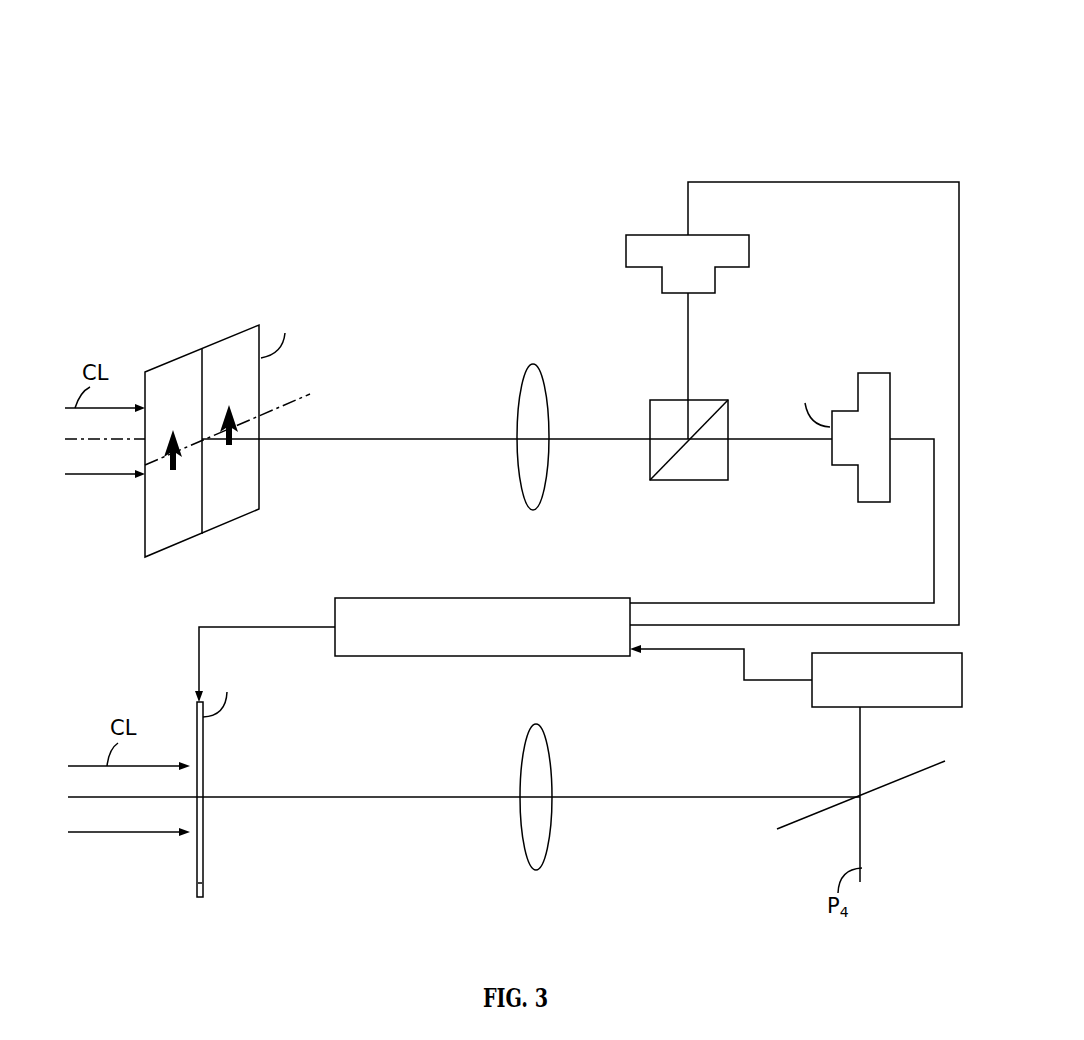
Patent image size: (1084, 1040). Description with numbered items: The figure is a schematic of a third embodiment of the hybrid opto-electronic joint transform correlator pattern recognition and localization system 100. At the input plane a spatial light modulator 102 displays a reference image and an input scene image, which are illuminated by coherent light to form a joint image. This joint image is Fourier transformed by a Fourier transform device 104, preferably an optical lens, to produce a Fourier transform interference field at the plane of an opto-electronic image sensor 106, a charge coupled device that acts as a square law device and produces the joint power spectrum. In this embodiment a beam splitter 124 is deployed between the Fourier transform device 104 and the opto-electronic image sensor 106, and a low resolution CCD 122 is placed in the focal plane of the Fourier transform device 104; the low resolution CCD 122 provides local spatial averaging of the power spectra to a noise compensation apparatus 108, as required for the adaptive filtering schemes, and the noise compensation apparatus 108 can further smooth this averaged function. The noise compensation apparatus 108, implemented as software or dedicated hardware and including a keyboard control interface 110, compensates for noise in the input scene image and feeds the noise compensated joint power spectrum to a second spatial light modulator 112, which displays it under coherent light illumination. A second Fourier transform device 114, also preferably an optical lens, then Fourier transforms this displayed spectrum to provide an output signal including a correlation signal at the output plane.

The hybrid opto-electronic joint transform correlator pattern recognition and locali 100 is at (742, 61).
The spatial light modulator 102 is at (178, 371).
The Fourier transform device 104 is at (530, 377).
The opto-electronic image sensor 106 is at (868, 380).
The noise compensation apparatus 108 is at (592, 647).
The keyboard control interface 110 is at (940, 692).
The second spatial light modulator 112 is at (203, 893).
The Fourier transform device 114 is at (538, 855).
The low resolution CCD 122 is at (666, 240).
The beam splitter 124 is at (702, 407).